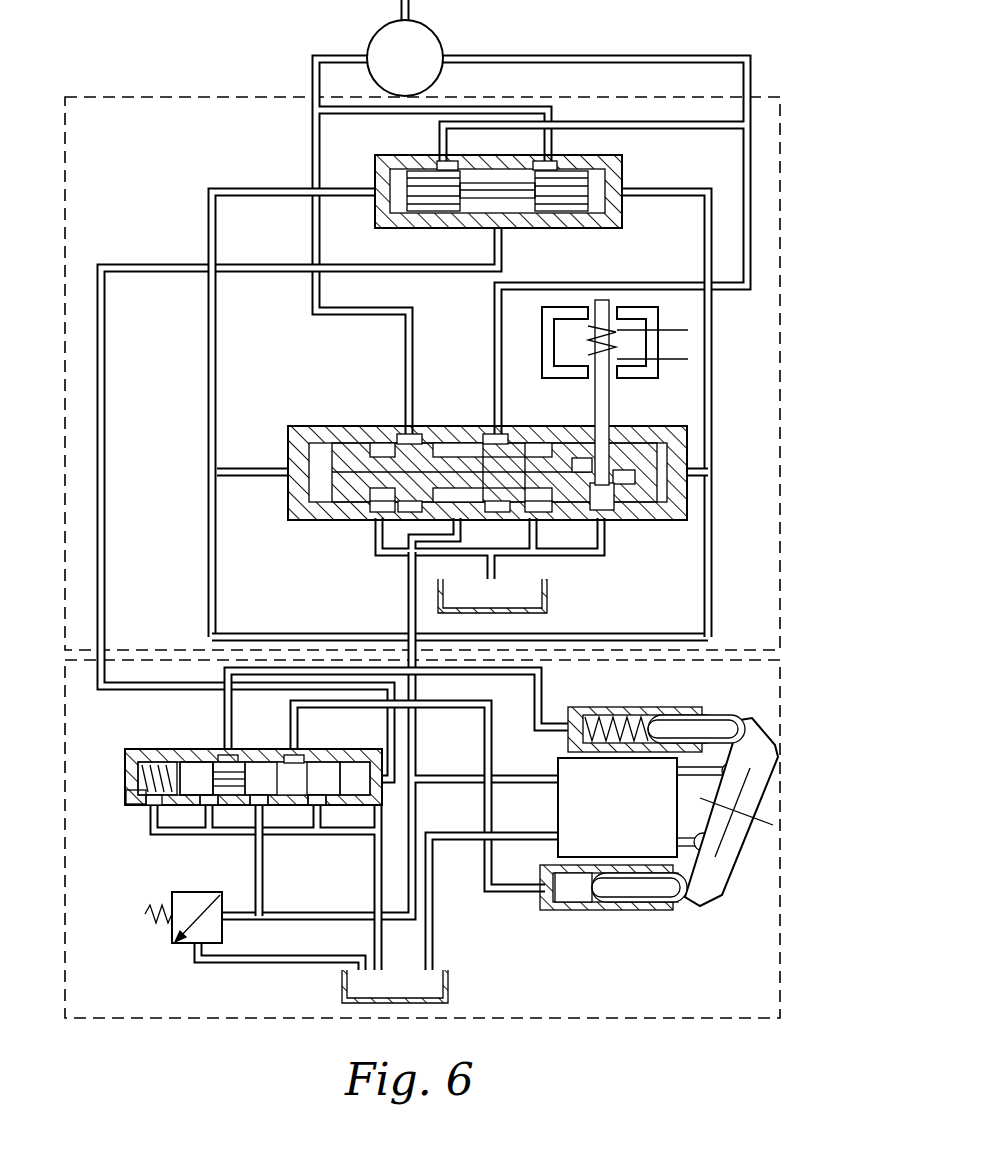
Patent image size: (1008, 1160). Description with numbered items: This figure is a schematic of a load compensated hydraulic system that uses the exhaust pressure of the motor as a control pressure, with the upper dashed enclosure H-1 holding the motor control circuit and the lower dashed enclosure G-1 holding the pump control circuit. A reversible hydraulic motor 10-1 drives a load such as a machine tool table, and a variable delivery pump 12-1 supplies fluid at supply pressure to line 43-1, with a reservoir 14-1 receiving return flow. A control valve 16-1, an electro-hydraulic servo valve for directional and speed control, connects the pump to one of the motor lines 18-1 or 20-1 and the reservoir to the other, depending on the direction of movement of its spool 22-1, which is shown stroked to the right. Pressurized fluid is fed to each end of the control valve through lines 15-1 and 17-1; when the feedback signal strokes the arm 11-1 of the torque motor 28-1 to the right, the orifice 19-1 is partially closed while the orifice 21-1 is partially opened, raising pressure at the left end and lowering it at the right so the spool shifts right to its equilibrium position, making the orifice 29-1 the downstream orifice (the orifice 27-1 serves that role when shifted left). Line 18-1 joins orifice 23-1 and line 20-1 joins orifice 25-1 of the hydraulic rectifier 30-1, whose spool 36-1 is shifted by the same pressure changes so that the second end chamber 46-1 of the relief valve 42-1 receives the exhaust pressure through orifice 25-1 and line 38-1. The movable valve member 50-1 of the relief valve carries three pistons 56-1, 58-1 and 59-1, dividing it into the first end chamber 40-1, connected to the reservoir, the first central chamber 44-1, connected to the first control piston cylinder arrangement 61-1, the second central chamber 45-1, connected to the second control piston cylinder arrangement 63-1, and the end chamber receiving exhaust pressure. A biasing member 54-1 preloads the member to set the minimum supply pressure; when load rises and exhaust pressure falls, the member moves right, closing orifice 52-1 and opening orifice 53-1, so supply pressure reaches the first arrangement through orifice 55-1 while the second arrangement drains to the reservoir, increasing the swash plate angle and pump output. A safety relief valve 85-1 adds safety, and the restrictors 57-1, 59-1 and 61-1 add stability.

The reversible hydraulic motor 10-1 is at (432, 34).
The arm 11-1 is at (600, 389).
The variable delivery pump 12-1 is at (558, 806).
The reservoir 14-1 is at (547, 600).
The line 15-1 is at (712, 630).
The control valve 16-1 is at (326, 408).
The line 17-1 is at (219, 623).
The motor line 18-1 is at (747, 58).
The orifice 19-1 is at (608, 516).
The motor line 20-1 is at (312, 63).
The orifice 21-1 is at (580, 515).
The control valve spool 22-1 is at (490, 434).
The orifice 23-1 is at (452, 162).
The orifice 25-1 is at (556, 162).
The downstream orifice 27-1 is at (510, 443).
The torque motor 28-1 is at (650, 316).
The downstream orifice 29-1 is at (415, 434).
The hydraulic rectifier 30-1 is at (622, 165).
The spool 36-1 is at (572, 200).
The line 38-1 is at (105, 493).
The first end chamber 40-1 is at (170, 749).
The relief valve 42-1 is at (128, 777).
The line 43-1 is at (408, 600).
The first central chamber 44-1 is at (233, 762).
The second central chamber 45-1 is at (300, 808).
The second end chamber 46-1 is at (352, 795).
The movable valve member 50-1 is at (298, 762).
The orifice 52-1 is at (160, 808).
The orifice 53-1 is at (322, 808).
The biasing member 54-1 is at (140, 794).
The orifice 55-1 is at (262, 864).
The piston 56-1 is at (196, 762).
The restrictor 57-1 is at (217, 564).
The piston 58-1 is at (247, 806).
The piston 59-1 is at (712, 569).
The first control piston cylinder arrangement 61-1 is at (652, 695).
The second control piston cylinder arrangement 63-1 is at (618, 910).
The safety relief valve 85-1 is at (172, 938).
The hydraulic control unit H-1 is at (65, 453).
The brake actuating unit G-1 is at (65, 983).